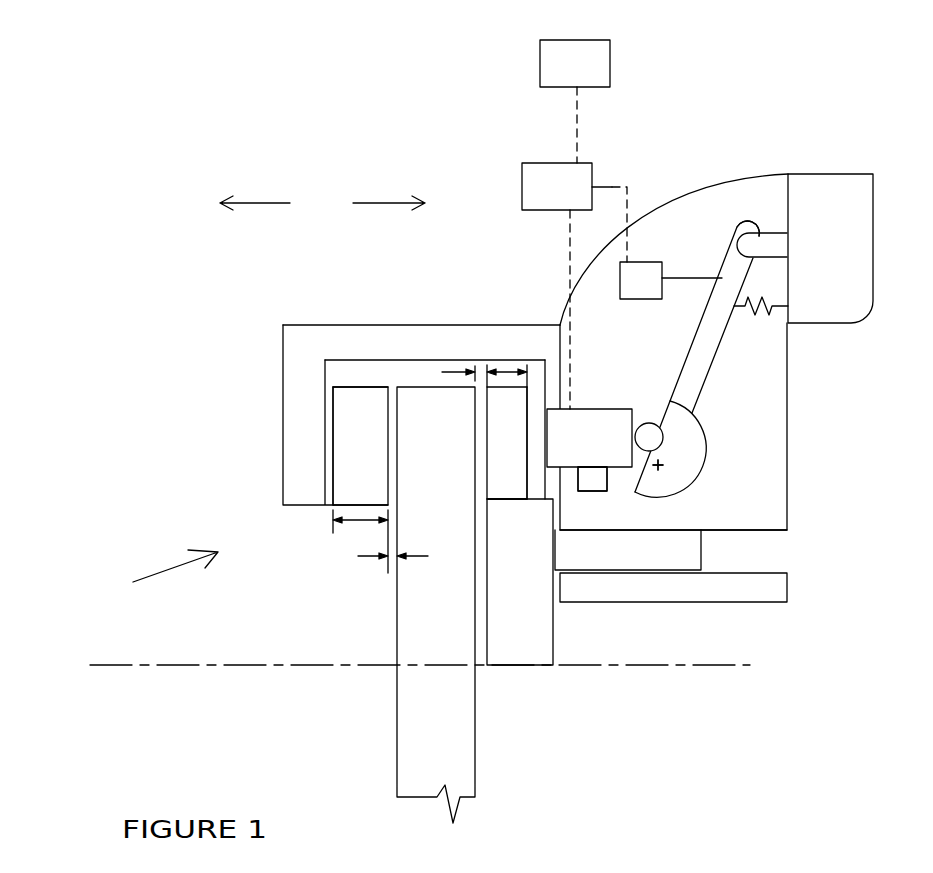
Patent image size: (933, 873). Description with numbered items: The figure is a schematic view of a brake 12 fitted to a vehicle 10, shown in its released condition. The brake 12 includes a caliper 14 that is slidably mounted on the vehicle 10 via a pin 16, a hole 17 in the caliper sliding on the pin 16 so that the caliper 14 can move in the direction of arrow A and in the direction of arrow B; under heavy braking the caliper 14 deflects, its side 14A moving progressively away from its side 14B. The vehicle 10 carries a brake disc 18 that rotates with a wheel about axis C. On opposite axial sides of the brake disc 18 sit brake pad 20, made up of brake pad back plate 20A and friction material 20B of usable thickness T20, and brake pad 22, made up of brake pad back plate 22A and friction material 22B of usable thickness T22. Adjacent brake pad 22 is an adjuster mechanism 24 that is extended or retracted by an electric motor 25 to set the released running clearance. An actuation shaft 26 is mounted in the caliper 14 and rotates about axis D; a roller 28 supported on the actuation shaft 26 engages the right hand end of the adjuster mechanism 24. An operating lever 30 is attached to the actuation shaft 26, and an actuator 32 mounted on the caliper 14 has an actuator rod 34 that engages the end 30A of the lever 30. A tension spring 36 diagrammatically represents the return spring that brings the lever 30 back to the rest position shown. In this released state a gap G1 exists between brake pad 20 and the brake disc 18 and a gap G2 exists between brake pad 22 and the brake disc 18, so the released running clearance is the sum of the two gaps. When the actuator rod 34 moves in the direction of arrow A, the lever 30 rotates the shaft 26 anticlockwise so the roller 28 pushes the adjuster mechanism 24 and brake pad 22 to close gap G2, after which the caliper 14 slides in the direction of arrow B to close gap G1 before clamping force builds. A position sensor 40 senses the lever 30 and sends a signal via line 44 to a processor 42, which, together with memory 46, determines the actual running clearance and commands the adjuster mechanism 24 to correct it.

The vehicle 10 is at (533, 601).
The brake 12 is at (159, 578).
The caliper 14 is at (347, 340).
The side of caliper 14A is at (295, 427).
The side of caliper 14B is at (773, 495).
The pin 16 is at (650, 564).
The hole 17 is at (762, 530).
The brake disc 18 is at (465, 752).
The brake pad 20 is at (365, 462).
The brake pad back plate 20A is at (330, 403).
The friction material 20B is at (345, 403).
The brake pad 22 is at (520, 462).
The brake pad back plate 22A is at (537, 483).
The friction material 22B is at (512, 410).
The adjuster mechanism 24 is at (602, 452).
The electric motor 25 is at (594, 491).
The actuation shaft 26 is at (685, 438).
The roller 28 is at (647, 423).
The operating lever 30 is at (722, 278).
The end of actuating lever 30A is at (740, 223).
The actuator 32 is at (849, 216).
The actuator rod 34 is at (760, 247).
The tension spring 36 is at (763, 313).
The sensor 40 is at (653, 297).
The processor 42 is at (569, 202).
The line 44 is at (613, 187).
The memory 46 is at (588, 76).
The arrow A is at (255, 192).
The arrow B is at (389, 192).
The axis C is at (247, 665).
The axis D is at (668, 462).
The gap G1 is at (368, 558).
The gap G2 is at (452, 365).
The usable thickness T20 is at (360, 522).
The usable thickness T22 is at (507, 378).